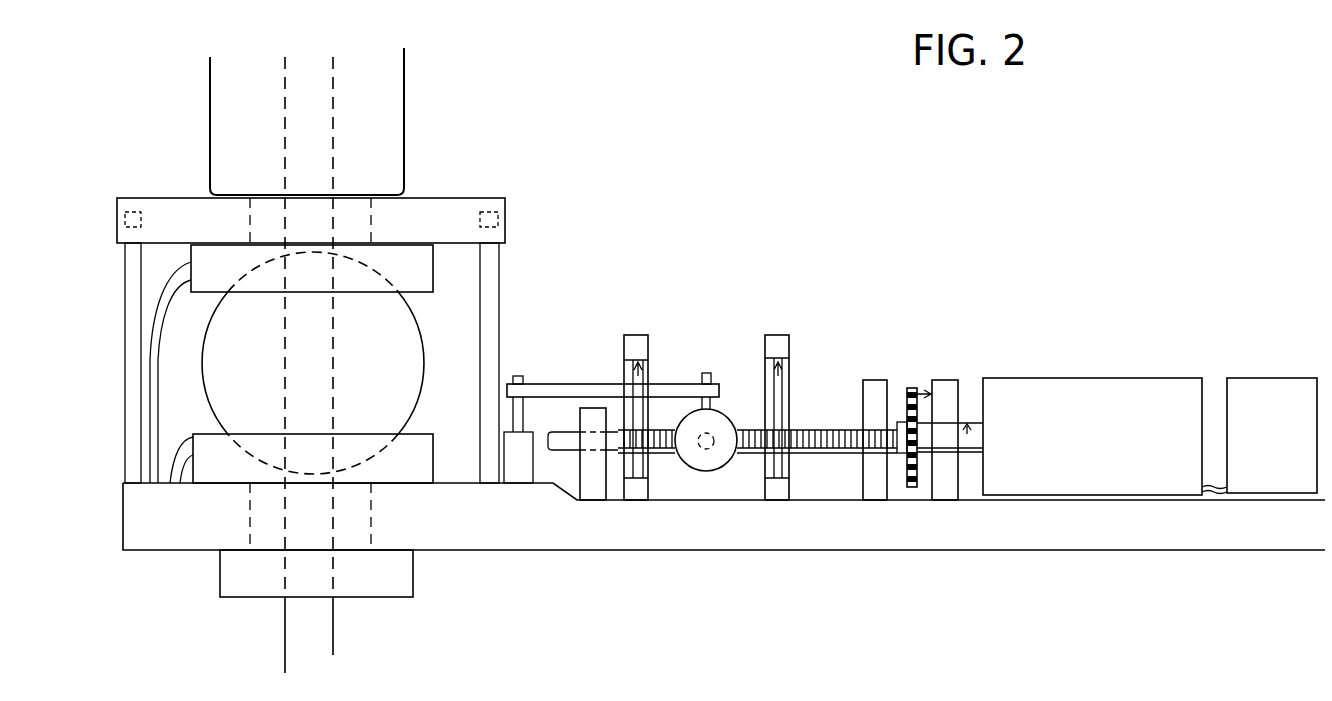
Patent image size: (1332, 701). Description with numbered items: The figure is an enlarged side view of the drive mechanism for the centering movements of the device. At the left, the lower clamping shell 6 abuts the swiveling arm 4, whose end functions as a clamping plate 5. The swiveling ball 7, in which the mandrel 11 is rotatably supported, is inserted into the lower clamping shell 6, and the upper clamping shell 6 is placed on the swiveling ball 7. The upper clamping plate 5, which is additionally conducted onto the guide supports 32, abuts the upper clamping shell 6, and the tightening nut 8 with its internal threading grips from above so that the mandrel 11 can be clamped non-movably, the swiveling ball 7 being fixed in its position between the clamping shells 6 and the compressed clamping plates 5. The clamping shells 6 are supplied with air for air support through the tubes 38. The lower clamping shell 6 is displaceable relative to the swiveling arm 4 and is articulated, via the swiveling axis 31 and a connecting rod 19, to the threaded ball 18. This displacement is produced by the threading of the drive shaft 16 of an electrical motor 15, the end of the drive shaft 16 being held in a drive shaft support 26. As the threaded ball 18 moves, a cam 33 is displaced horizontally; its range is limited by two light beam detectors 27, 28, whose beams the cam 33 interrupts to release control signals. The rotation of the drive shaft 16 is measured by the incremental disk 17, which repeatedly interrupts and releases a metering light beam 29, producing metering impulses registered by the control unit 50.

The swiveling arm 4 is at (912, 527).
The clamping plate 5 is at (413, 213).
The clamping shell 6 is at (420, 268).
The swiveling ball 7 is at (398, 333).
The tightening nut 8 is at (387, 122).
The mandrel 11 is at (300, 625).
The electrical motor 15 is at (1053, 418).
The drive shaft 16 is at (967, 427).
The incremental disk 17 is at (912, 390).
The threaded ball 18 is at (693, 455).
The connecting rod 19 is at (663, 390).
The drive shaft support 26 is at (593, 490).
The light beam detector 27 is at (643, 380).
The light beam detector 28 is at (778, 395).
The metering light beam 29 is at (897, 390).
The swiveling axis 31 is at (520, 373).
The guide support 32 is at (135, 362).
The cam 33 is at (713, 443).
The tube 38 is at (168, 475).
The control unit 50 is at (1245, 390).